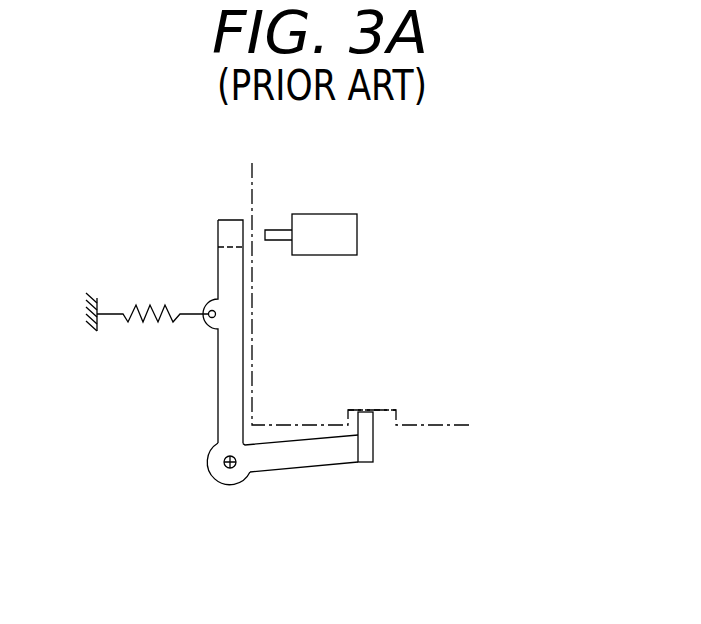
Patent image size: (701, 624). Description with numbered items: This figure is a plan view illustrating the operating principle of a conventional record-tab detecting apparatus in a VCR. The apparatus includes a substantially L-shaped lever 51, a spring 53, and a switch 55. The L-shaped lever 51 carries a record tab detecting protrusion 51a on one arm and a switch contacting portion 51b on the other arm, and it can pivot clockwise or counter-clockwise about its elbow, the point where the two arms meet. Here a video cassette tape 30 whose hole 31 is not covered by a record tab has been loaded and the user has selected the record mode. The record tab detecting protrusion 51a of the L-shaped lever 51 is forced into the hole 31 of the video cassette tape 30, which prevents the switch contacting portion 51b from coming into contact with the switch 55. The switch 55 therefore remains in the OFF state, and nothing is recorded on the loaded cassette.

The video cassette tape 30 is at (440, 425).
The hole 31 is at (392, 423).
The L-shaped lever 51 is at (266, 382).
The record tab detecting protrusion 51a is at (367, 423).
The switch contacting portion 51b is at (228, 235).
The spring 53 is at (156, 316).
The switch 55 is at (325, 232).